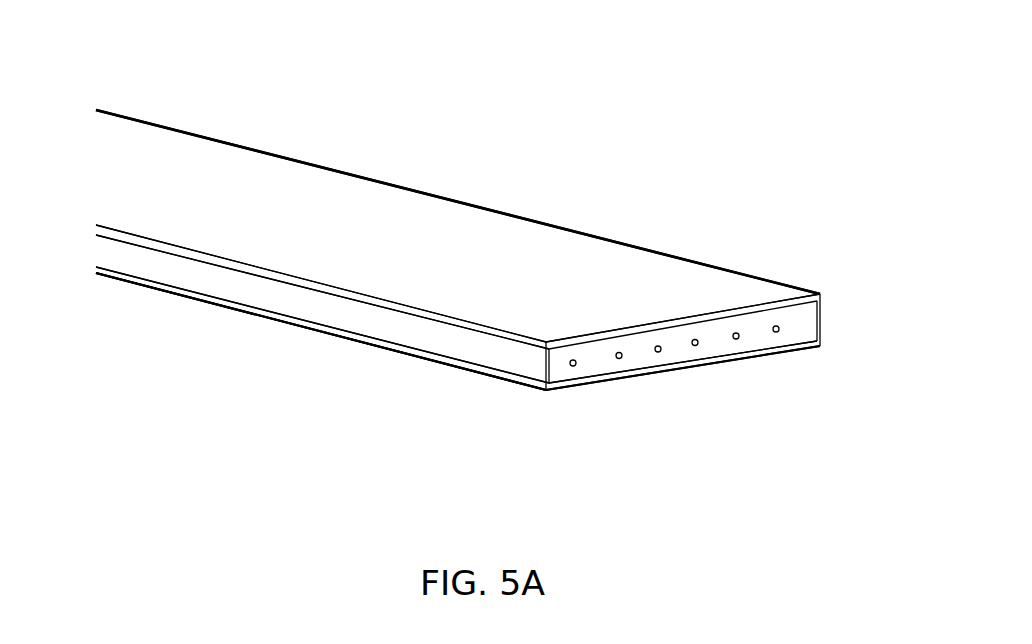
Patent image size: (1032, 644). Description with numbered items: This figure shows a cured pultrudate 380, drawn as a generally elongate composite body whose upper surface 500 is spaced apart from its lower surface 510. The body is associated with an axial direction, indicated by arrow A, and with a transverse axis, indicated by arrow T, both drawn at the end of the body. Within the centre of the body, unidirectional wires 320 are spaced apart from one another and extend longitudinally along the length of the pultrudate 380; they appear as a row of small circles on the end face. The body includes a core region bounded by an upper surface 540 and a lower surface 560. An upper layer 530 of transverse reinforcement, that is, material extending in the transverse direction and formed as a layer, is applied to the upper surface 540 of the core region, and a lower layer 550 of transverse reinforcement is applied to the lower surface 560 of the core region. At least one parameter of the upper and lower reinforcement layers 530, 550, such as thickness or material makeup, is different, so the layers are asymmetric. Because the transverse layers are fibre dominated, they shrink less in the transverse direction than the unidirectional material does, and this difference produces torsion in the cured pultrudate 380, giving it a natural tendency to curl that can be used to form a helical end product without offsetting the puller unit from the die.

The pultrudate 380 is at (580, 124).
The upper surface 500 is at (667, 276).
The lower surface 510 is at (463, 388).
The upper layer of transverse reinforcement 530 is at (223, 263).
The upper surface of core region 540 is at (319, 280).
The lower layer of transverse reinforcement 550 is at (118, 278).
The lower surface of core region 560 is at (322, 335).
The unidirectional wires 320 is at (577, 366).
The transverse axis arrow T is at (762, 337).
The axial direction arrow A is at (718, 346).